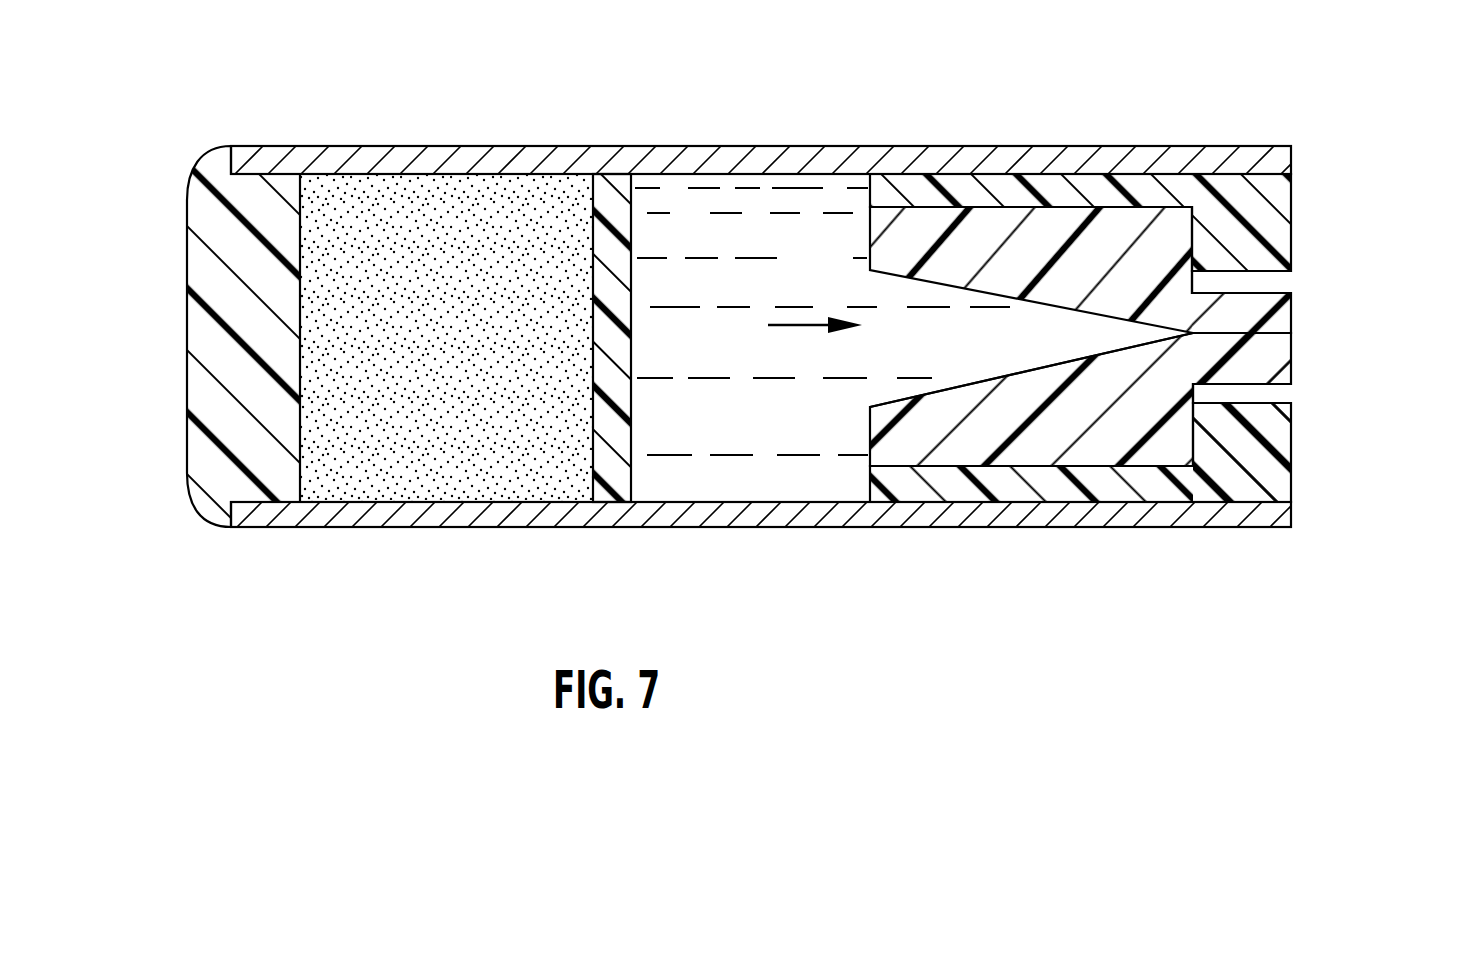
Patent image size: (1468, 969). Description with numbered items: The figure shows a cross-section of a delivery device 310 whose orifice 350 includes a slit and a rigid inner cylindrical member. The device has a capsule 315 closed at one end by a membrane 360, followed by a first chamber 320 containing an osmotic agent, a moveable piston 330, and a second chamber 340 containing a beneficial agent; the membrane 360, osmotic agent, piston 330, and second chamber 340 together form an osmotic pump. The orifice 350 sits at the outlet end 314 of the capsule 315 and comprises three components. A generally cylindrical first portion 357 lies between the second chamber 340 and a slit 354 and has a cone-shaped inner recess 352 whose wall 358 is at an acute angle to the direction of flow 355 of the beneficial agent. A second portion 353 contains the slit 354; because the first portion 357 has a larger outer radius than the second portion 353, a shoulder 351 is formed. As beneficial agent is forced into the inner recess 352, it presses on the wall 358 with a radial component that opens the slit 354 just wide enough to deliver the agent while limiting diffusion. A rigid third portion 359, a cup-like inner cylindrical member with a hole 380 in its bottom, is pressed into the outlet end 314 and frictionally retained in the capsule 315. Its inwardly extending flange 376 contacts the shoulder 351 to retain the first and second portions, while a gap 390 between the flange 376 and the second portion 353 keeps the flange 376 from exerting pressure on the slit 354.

The delivery device 310 is at (809, 302).
The outlet end 314 is at (1293, 205).
The capsule 315 is at (653, 528).
The first chamber 320 is at (452, 175).
The moveable piston 330 is at (622, 432).
The second chamber 340 is at (685, 177).
The orifice 350 is at (1128, 347).
The shoulder 351 is at (1268, 468).
The inner recess 352 is at (925, 320).
The second portion 353 is at (1273, 358).
The slit 354 is at (1293, 317).
The direction of flow 355 is at (790, 328).
The first portion 357 is at (1052, 450).
The wall 358 is at (955, 388).
The third portion 359 is at (1168, 485).
The membrane 360 is at (213, 513).
The inwardly extending flange 376 is at (1283, 447).
The hole 380 is at (1268, 280).
The gap 390 is at (1316, 393).